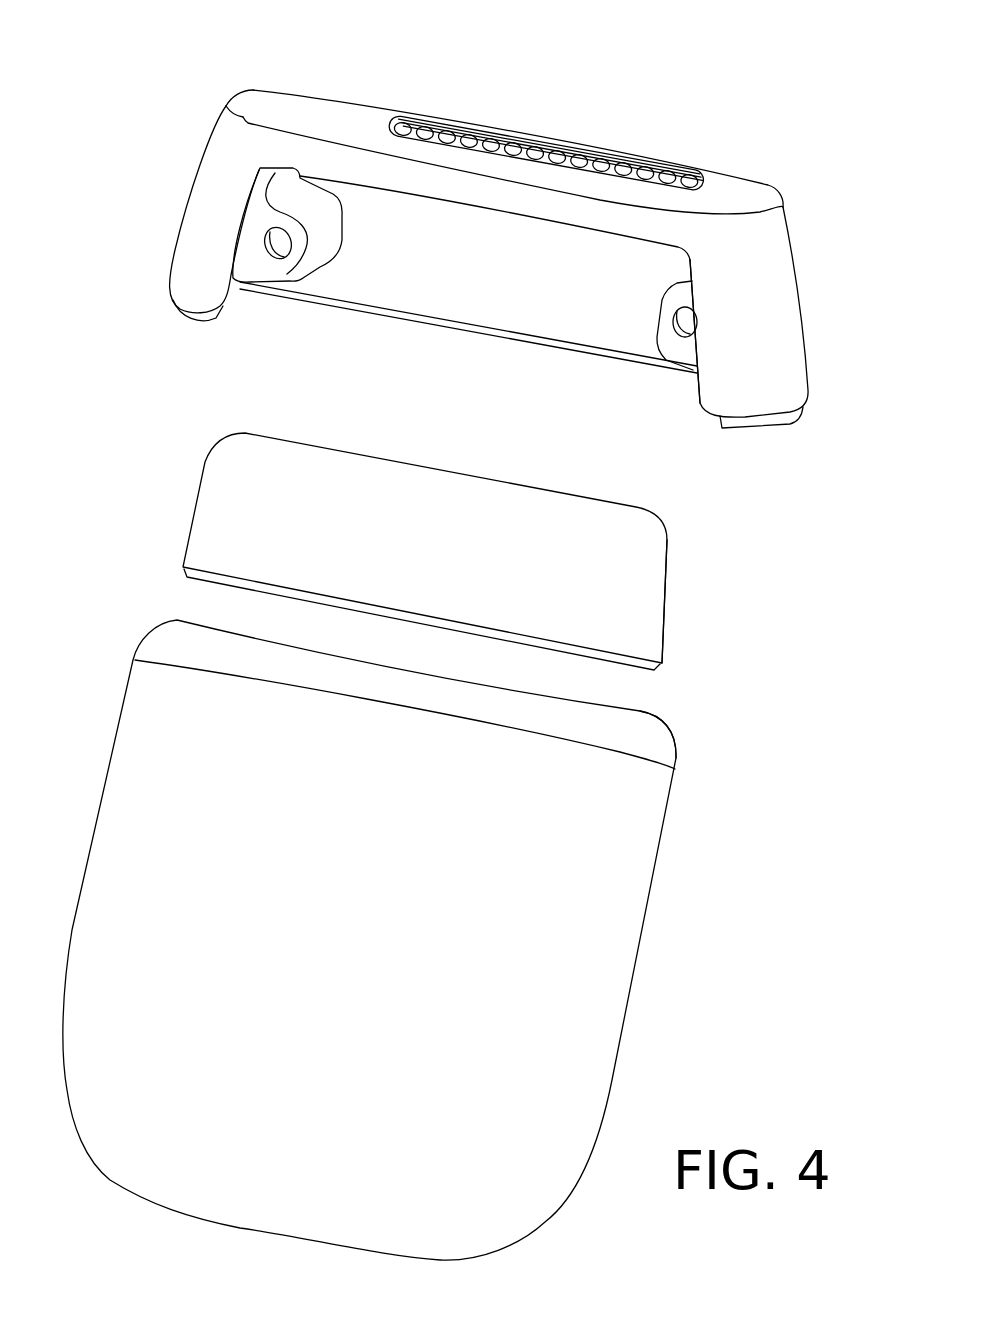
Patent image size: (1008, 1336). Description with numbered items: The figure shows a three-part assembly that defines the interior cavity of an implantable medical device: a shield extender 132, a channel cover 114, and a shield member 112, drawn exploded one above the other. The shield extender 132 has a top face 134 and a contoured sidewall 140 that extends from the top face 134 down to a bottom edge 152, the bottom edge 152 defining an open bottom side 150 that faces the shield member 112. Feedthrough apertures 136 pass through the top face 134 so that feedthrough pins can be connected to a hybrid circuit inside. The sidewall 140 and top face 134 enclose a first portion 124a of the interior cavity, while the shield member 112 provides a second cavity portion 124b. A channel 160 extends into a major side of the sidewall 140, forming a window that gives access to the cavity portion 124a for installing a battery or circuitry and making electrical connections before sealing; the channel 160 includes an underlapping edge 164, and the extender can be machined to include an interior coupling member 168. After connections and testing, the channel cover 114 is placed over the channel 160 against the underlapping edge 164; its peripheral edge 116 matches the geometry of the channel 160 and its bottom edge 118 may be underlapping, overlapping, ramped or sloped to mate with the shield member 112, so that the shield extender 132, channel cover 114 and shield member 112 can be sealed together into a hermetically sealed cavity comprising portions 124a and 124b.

The shield member 112 is at (665, 832).
The channel cover 114 is at (182, 549).
The peripheral edge 116 is at (667, 583).
The bottom edge 118 is at (197, 581).
The first portion of interior cavity 124a is at (648, 259).
The interior cavity portion 124b is at (658, 714).
The shield extender 132 is at (541, 31).
The top face 134 is at (737, 187).
The feedthrough apertures 136 is at (550, 148).
The sidewall 140 is at (243, 110).
The open bottom side 150 is at (418, 362).
The bottom edge 152 is at (742, 426).
The channel 160 is at (700, 381).
The underlapping edge 164 is at (238, 290).
The interior coupling member 168 is at (293, 270).